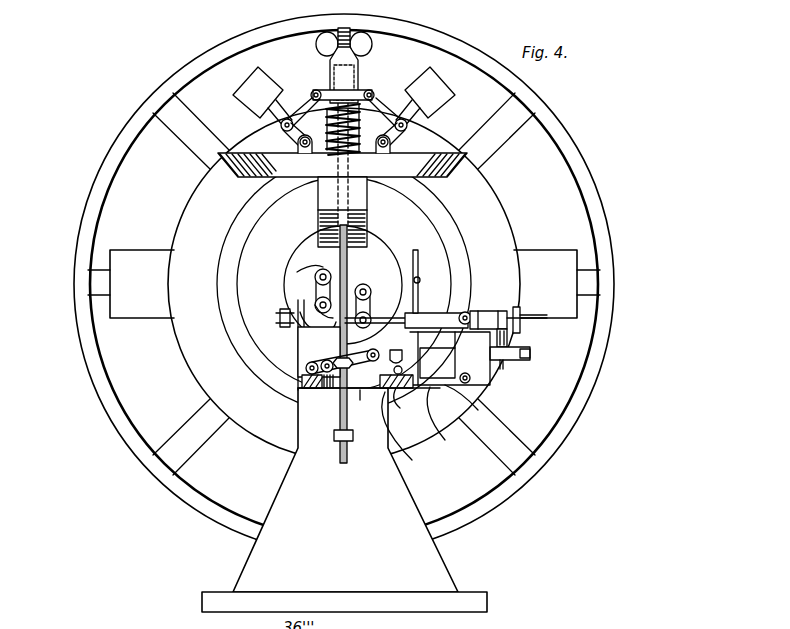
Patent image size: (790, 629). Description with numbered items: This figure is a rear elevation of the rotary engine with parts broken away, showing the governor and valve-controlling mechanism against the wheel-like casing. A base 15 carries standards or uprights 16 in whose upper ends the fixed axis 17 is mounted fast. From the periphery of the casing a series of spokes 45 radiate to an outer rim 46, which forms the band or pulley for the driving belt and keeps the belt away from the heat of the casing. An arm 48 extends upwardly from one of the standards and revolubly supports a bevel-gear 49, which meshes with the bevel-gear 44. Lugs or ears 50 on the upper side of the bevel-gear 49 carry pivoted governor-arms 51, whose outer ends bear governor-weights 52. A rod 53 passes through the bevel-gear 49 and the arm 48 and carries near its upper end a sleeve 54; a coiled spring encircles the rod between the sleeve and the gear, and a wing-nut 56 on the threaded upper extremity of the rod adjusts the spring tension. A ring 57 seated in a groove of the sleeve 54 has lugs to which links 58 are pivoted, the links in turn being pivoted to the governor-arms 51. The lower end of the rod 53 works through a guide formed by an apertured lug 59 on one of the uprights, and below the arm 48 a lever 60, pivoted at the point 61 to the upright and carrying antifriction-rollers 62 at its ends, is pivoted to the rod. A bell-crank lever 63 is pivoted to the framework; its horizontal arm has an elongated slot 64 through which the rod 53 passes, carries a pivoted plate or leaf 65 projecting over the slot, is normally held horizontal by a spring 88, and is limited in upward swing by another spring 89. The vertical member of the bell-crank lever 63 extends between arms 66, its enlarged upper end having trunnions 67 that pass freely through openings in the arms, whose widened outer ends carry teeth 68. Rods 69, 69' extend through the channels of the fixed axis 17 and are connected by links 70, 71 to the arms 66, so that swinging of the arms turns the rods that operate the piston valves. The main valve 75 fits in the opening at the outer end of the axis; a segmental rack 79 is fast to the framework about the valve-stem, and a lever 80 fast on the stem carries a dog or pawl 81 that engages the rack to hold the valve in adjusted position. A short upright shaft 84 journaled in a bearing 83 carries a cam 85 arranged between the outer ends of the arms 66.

The base 15 is at (490, 600).
The standards or uprights 16 is at (430, 552).
The fixed axis 17 is at (390, 272).
The bevel-gear 44 is at (246, 237).
The spokes 45 is at (500, 141).
The outer rim 46 is at (577, 407).
The arm 48 is at (367, 213).
The bevel-gear 49 is at (456, 180).
The lugs or ears 50 is at (297, 146).
The governor-arms 51 is at (280, 124).
The governor-weights 52 is at (236, 96).
The rod 53 is at (360, 128).
The sleeve 54 is at (358, 70).
The wing-nut 56 is at (370, 47).
The ring 57 is at (368, 89).
The links 58 is at (312, 94).
The apertured lug 59 is at (353, 436).
The lever 60 is at (300, 352).
The pivot point 61 is at (306, 366).
The antifriction-rollers 62 is at (302, 374).
The bell-crank lever 63 is at (456, 398).
The elongated slot 64 is at (366, 390).
The plate or leaf 65 is at (390, 392).
The arms 66 is at (426, 318).
The trunnions 67 is at (470, 313).
The teeth 68 is at (312, 312).
The rod 69 is at (359, 284).
The rod 69' is at (283, 260).
The link 70 is at (370, 292).
The link 71 is at (315, 290).
The main valve 75 is at (282, 322).
The segmental rack 79 is at (474, 308).
The lever 80 is at (419, 258).
The dog or pawl 81 is at (421, 279).
The bearing 83 is at (522, 360).
The short upright shaft 84 is at (502, 369).
The cam 85 is at (512, 308).
The spring 88 is at (444, 412).
The spring 89 is at (418, 425).